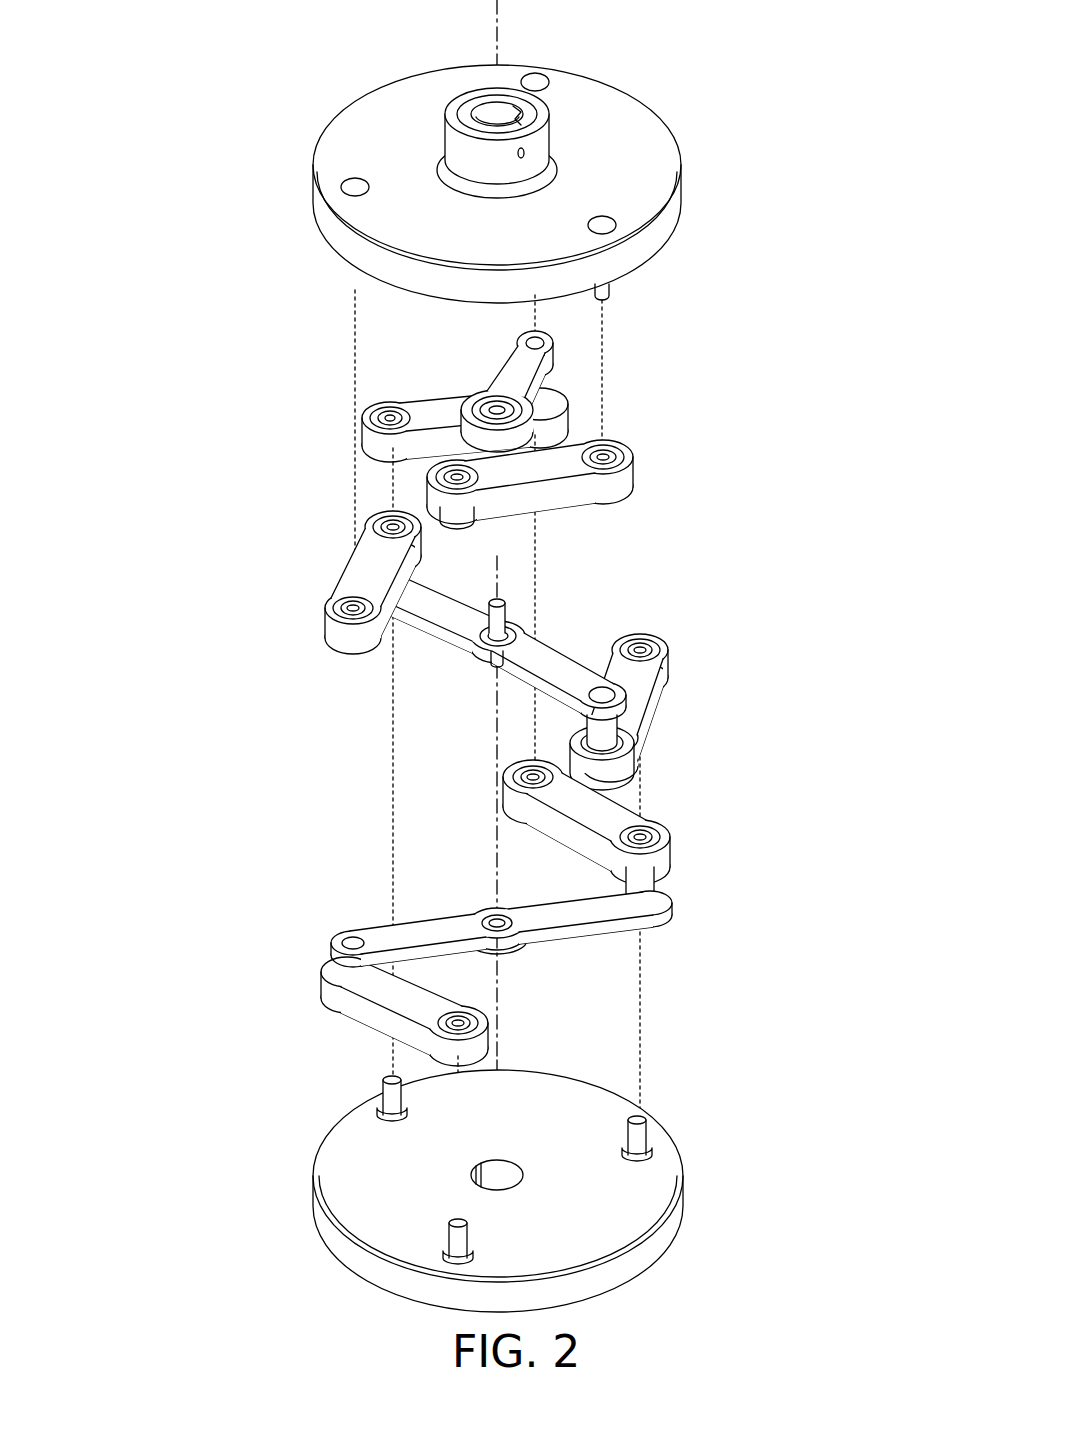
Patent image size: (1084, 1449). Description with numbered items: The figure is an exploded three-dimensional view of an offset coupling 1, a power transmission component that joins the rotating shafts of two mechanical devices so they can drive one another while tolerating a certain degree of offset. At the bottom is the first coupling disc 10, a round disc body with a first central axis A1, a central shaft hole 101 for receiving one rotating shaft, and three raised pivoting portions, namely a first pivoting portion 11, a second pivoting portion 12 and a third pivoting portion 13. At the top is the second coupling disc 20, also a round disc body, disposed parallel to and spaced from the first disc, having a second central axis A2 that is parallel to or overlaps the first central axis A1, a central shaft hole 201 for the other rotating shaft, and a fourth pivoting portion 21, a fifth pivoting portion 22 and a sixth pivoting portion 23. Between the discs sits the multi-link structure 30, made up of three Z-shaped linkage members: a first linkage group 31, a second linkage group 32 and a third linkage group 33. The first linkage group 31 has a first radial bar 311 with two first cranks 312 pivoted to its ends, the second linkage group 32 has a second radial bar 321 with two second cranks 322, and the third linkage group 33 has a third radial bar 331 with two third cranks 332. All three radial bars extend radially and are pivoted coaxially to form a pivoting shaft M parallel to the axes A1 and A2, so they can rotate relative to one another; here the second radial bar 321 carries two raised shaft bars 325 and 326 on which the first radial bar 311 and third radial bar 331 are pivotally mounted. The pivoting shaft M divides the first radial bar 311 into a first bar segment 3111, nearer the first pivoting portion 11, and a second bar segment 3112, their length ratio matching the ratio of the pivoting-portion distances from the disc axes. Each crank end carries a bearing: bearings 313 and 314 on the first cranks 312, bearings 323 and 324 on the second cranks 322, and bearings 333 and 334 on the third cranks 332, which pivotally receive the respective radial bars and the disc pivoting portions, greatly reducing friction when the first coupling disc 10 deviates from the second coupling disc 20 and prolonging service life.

The offset coupling 1 is at (236, 82).
The first coupling disc 10 is at (682, 1212).
The shaft hole 101 is at (522, 1177).
The first pivoting portion 11 is at (442, 1256).
The second pivoting portion 12 is at (652, 1128).
The third pivoting portion 13 is at (384, 1090).
The second coupling disc 20 is at (320, 150).
The shaft hole 201 is at (508, 120).
The fourth pivoting portion 21 is at (537, 80).
The fifth pivoting portion 22 is at (345, 188).
The sixth pivoting portion 23 is at (610, 240).
The multi-link structure 30 is at (742, 493).
The first linkage group 31 is at (664, 928).
The first radial bar 311 is at (745, 975).
The first bar segment 3111 is at (418, 938).
The second bar segment 3112 is at (588, 912).
The first crank 312 is at (504, 913).
The bearing 313 is at (647, 828).
The bearing 314 is at (533, 796).
The second linkage group 32 is at (664, 693).
The second radial bar 321 is at (426, 632).
The second crank 322 is at (466, 650).
The bearing 323 is at (368, 528).
The bearing 324 is at (466, 650).
The shaft bar 325 is at (495, 684).
The shaft bar 326 is at (492, 660).
The third linkage group 33 is at (645, 494).
The third radial bar 331 is at (526, 347).
The third crank 332 is at (501, 437).
The bearing 333 is at (460, 518).
The bearing 334 is at (501, 437).
The first central axis A1 is at (497, 1054).
The second central axis A2 is at (497, 14).
The pivoting shaft M is at (494, 836).